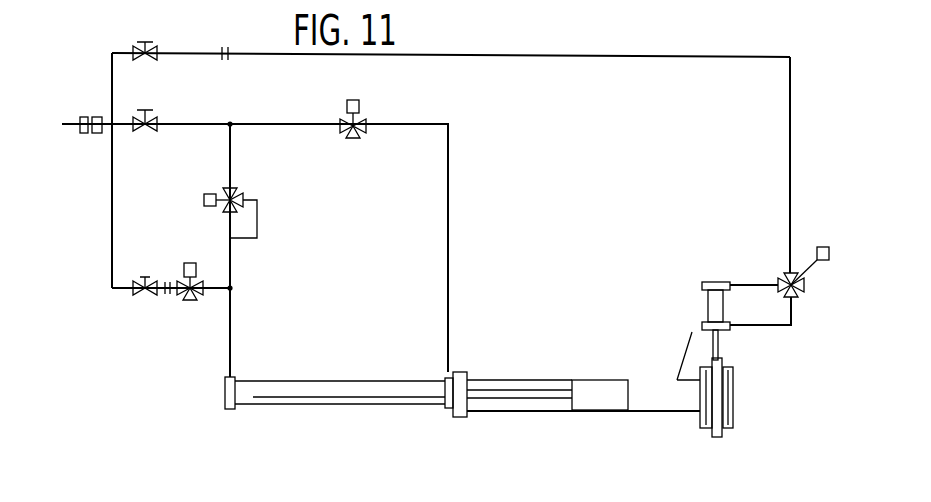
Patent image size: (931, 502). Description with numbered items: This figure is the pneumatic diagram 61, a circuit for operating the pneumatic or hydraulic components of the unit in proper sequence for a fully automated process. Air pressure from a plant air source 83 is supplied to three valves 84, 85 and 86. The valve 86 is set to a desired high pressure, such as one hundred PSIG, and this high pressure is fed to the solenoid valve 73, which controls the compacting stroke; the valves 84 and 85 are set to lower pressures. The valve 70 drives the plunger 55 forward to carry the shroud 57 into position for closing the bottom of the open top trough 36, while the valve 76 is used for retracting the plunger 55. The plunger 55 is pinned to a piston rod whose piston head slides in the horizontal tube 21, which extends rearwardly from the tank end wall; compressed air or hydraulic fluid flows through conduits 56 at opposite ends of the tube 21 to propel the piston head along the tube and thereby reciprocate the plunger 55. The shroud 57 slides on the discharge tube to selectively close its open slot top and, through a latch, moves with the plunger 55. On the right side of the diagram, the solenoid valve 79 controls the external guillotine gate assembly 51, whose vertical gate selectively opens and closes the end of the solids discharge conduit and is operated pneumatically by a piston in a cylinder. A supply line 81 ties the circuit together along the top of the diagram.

The horizontal tube 21 is at (462, 381).
The open top trough 36 is at (627, 380).
The external guillotine gate assembly 51 is at (740, 369).
The plunger 55 is at (588, 392).
The conduits 56 is at (236, 378).
The shroud 57 is at (647, 391).
The pneumatic diagram 61 is at (454, 136).
The valve 70 is at (243, 200).
The solenoid valve 73 is at (183, 312).
The valve 76 is at (360, 108).
The solenoid valve 79 is at (806, 286).
The supply line 81 is at (767, 25).
The plant air source 83 is at (86, 134).
The valve 84 is at (145, 41).
The valve 85 is at (147, 113).
The valve 86 is at (144, 276).